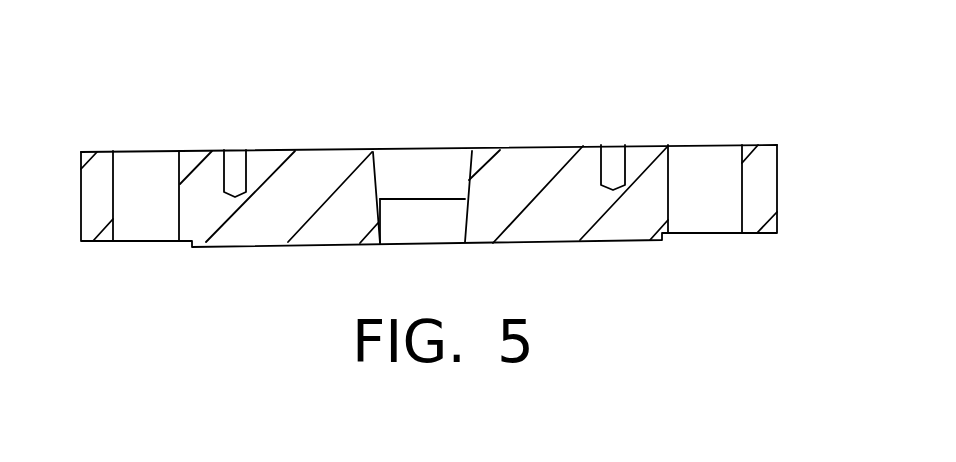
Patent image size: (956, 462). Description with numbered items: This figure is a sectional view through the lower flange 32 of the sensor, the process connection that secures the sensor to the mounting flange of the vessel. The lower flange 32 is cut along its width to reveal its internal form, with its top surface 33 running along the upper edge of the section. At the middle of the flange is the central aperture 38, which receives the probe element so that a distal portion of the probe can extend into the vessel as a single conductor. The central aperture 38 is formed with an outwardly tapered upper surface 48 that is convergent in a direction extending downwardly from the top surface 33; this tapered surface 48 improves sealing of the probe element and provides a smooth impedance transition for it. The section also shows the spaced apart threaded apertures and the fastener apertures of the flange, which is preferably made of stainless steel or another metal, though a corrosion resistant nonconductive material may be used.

The lower flange 32 is at (540, 143).
The top surface 33 is at (321, 150).
The central aperture 38 is at (380, 220).
The outwardly tapered upper surface 48 is at (375, 170).